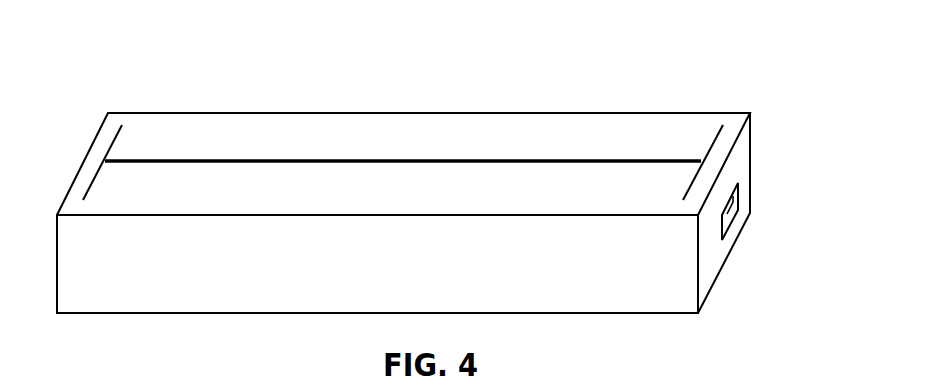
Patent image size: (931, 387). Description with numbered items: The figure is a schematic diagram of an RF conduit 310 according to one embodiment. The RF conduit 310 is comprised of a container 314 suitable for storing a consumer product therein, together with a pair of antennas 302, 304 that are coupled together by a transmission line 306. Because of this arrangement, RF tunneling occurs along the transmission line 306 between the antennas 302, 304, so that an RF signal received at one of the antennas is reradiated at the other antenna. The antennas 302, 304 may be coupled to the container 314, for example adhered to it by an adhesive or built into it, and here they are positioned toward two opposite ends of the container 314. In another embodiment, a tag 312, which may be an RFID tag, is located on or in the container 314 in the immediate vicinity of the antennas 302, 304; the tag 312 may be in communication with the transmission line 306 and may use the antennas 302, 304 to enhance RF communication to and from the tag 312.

The antenna 302 is at (110, 142).
The antenna 304 is at (712, 148).
The transmission line 306 is at (508, 159).
The RF conduit 310 is at (243, 140).
The tag 312 is at (738, 202).
The container 314 is at (422, 271).